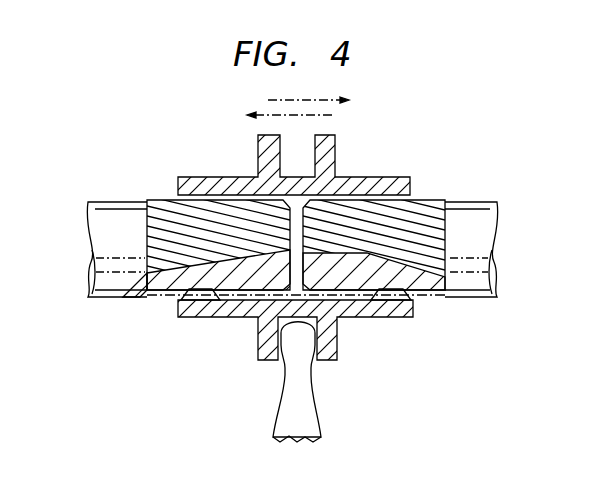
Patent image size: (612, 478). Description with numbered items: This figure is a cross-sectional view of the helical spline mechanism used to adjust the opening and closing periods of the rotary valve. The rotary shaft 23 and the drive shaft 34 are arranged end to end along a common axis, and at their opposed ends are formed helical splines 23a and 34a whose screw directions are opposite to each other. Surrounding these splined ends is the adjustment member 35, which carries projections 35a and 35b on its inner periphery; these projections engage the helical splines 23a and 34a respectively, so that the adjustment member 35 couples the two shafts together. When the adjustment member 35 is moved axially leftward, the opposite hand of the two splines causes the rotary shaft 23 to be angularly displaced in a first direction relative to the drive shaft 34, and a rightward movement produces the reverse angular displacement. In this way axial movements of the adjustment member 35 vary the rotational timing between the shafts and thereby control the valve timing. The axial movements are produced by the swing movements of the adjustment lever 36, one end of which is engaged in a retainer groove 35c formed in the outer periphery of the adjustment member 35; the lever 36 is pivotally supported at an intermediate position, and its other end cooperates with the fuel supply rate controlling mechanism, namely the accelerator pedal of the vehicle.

The rotary shaft 23 is at (473, 200).
The helical spline 23a is at (430, 200).
The drive shaft 34 is at (107, 200).
The helical spline 34a is at (164, 200).
The adjustment member 35 is at (378, 192).
The projection 35a is at (200, 300).
The projection 35b is at (396, 300).
The retainer groove 35c is at (298, 142).
The adjustment lever 36 is at (300, 408).